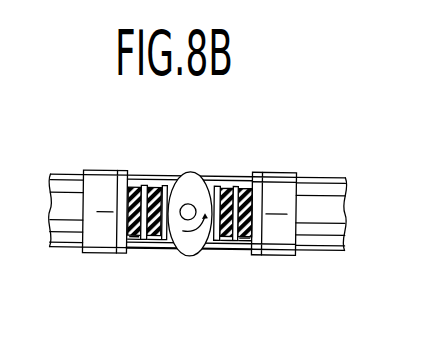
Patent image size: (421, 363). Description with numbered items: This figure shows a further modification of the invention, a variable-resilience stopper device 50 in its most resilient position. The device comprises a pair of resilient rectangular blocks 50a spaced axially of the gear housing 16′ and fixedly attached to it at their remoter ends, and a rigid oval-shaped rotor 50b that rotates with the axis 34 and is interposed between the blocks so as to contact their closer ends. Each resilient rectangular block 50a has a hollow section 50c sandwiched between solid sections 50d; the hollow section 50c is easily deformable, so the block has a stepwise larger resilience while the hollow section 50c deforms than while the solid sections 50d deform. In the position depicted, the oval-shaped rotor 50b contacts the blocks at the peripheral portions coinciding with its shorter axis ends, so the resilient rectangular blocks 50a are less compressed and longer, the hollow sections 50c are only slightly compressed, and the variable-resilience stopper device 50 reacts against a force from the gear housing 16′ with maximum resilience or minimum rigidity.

The gear housing 16′ is at (64, 170).
The variable-resilience stopper device 50 is at (211, 231).
The resilient rectangular blocks 50a is at (153, 248).
The oval-shaped rotor 50b is at (188, 256).
The hollow section 50c is at (146, 246).
The solid sections 50d is at (151, 177).
The axis 34 is at (190, 204).